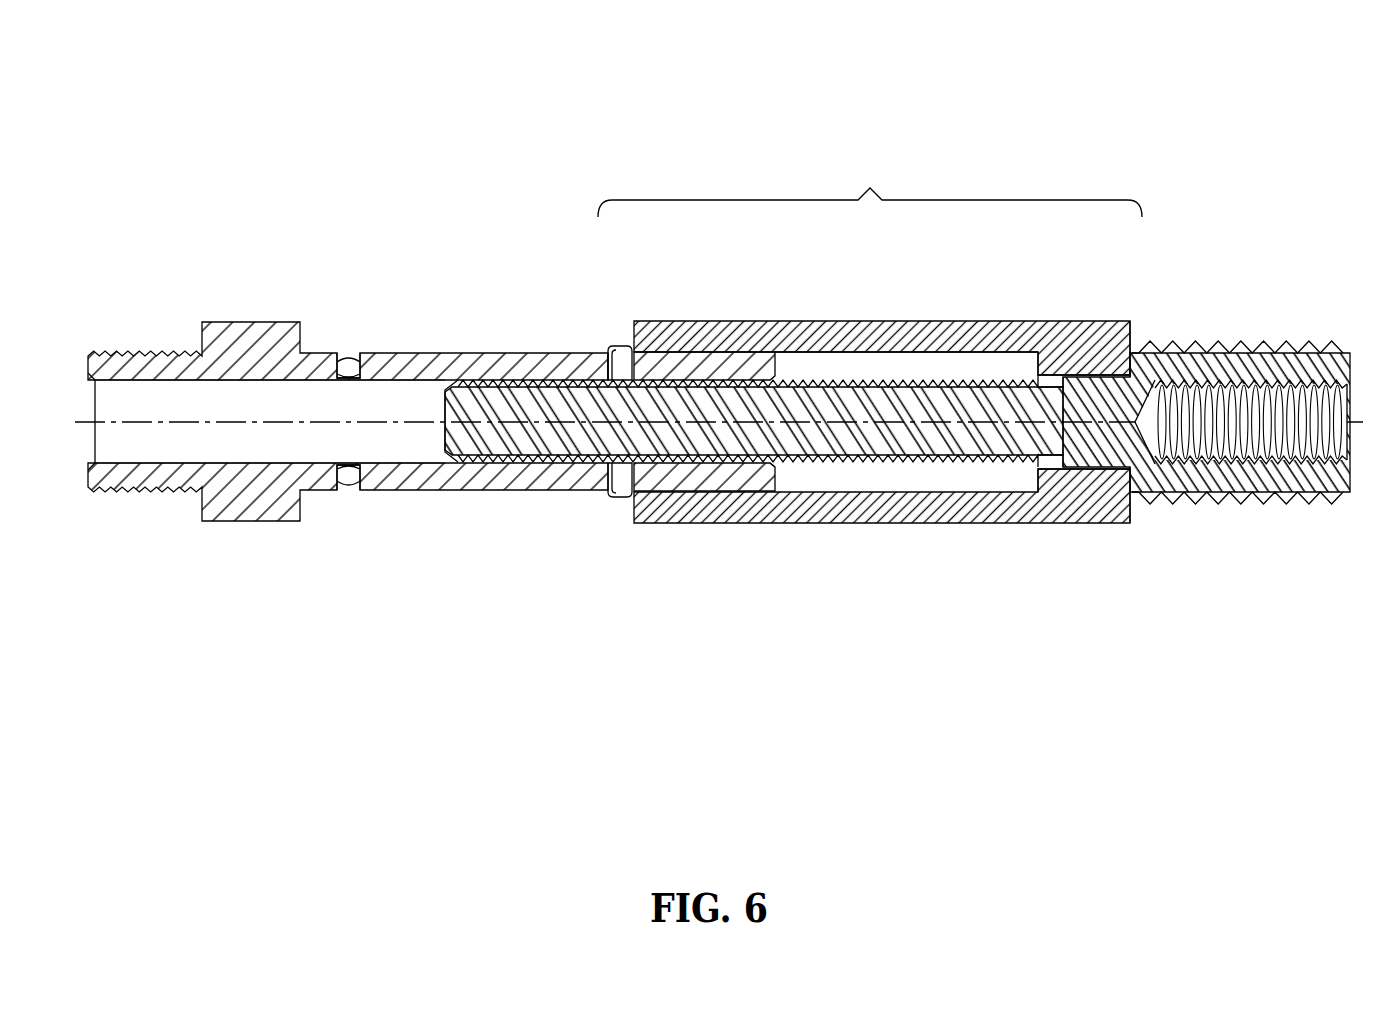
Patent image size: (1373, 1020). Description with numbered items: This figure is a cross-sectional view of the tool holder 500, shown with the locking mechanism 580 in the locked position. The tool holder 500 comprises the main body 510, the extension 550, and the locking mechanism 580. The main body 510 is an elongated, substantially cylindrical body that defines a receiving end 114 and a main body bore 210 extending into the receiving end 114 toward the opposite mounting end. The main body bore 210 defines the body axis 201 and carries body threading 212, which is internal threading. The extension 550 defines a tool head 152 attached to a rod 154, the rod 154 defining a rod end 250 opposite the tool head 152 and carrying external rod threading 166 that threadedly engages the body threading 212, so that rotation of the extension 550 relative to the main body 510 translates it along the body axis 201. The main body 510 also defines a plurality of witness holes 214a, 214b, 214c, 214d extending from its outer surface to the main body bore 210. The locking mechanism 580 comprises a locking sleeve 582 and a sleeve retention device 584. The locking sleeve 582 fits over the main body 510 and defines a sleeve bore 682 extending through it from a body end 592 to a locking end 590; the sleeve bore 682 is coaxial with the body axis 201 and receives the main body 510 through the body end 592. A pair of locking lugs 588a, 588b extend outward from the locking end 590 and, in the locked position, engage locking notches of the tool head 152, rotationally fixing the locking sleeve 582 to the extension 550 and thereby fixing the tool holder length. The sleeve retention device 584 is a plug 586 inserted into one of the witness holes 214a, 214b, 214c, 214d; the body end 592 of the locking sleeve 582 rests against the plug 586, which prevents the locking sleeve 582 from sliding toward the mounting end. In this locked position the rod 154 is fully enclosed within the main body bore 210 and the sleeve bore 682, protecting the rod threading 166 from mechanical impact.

The tool holder 500 is at (609, 55).
The main body 510 is at (425, 365).
The main body bore 210 is at (127, 450).
The body axis 201 is at (197, 424).
The witness hole 214a is at (343, 353).
The witness hole 214b is at (606, 352).
The witness hole 214c is at (348, 493).
The witness hole 214d is at (617, 492).
The sleeve retention device 584 is at (614, 347).
The locking mechanism 580 is at (870, 187).
The locking sleeve 582 is at (840, 523).
The plug 586 is at (622, 346).
The body end 592 is at (631, 515).
The locking lug 588a is at (1127, 320).
The locking lug 588b is at (1098, 524).
The locking end 590 is at (1132, 332).
The sleeve bore 682 is at (835, 365).
The receiving end 114 is at (790, 465).
The rod end 250 is at (445, 448).
The body threading 212 is at (512, 440).
The rod 154 is at (883, 450).
The rod threading 166 is at (950, 452).
The extension 550 is at (1270, 343).
The tool head 152 is at (1222, 498).